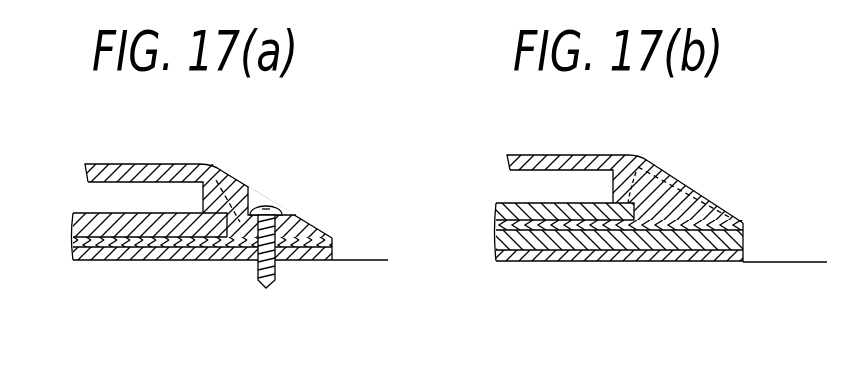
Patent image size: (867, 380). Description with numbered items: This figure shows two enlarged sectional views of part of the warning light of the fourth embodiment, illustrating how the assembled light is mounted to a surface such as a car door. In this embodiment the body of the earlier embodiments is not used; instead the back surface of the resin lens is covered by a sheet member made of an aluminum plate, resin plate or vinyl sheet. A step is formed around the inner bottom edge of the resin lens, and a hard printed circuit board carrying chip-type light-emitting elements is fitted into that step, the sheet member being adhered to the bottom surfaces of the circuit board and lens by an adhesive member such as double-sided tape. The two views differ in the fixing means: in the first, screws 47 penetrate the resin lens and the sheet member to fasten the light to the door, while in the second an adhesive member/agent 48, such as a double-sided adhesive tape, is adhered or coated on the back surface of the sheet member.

The screw 47 is at (276, 197).
The adhesive member/agent 48 is at (748, 260).